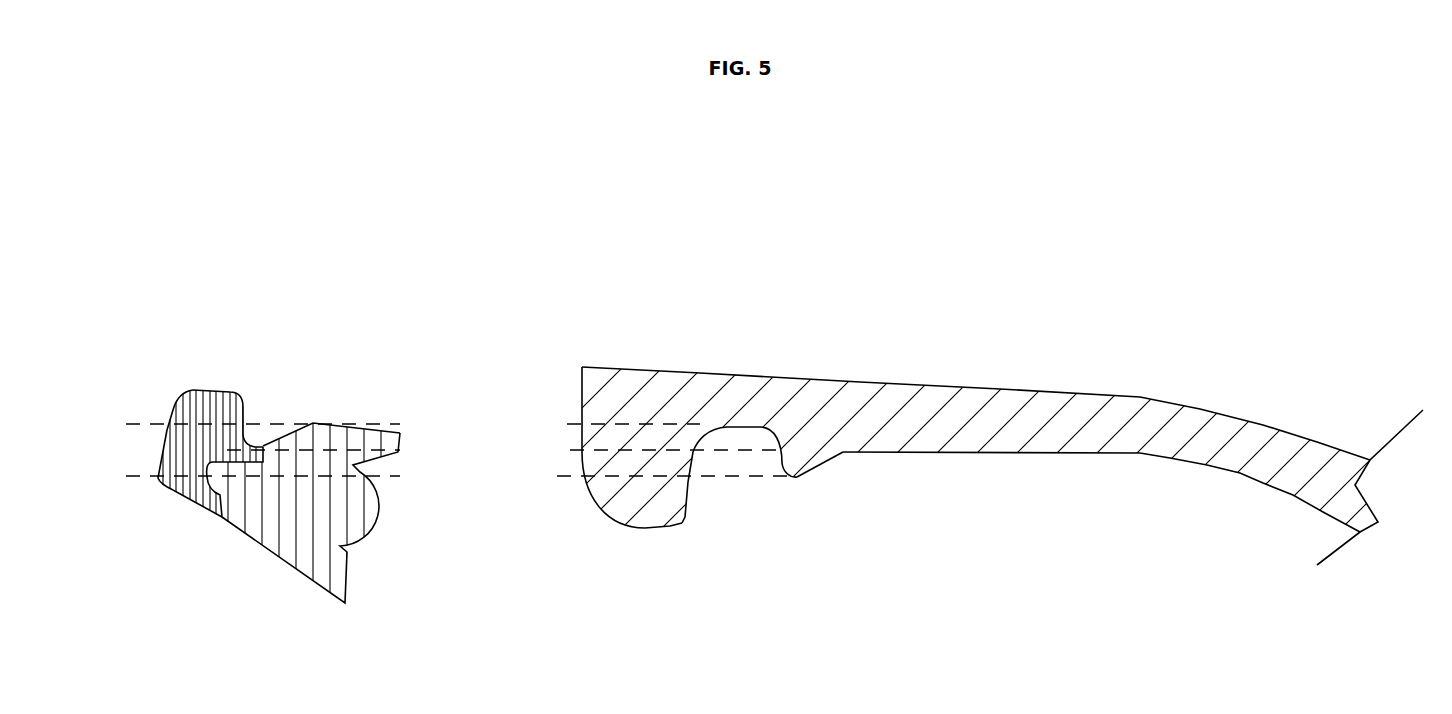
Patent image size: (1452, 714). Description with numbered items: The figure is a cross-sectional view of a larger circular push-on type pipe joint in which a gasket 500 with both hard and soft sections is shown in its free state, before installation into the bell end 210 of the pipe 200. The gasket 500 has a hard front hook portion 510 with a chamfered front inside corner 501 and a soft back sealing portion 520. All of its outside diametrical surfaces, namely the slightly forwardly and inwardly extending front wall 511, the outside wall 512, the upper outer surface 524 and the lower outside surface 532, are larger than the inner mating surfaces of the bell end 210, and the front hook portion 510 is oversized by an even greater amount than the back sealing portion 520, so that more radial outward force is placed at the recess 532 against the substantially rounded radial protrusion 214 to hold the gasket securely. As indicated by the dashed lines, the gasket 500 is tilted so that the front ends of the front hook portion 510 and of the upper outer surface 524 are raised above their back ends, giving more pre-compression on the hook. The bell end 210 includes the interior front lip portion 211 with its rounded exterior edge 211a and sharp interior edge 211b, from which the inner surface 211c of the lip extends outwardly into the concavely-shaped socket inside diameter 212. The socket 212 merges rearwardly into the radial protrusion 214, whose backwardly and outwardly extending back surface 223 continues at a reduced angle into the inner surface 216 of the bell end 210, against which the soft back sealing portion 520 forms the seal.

The pipe 200 is at (1098, 381).
The bell end 210 is at (582, 367).
The interior front lip portion 211 is at (625, 538).
The rounded front or exterior edge 211a is at (593, 498).
The substantially sharp rear or interior edge 211b is at (672, 530).
The inner surface of the lip portion 211c is at (687, 490).
The socket or groove 212 is at (745, 427).
The substantially round radial protrusion 214 is at (798, 475).
The inner surface of the bell end 216 is at (880, 452).
The backwardly and outwardly extending back surface 223 is at (833, 453).
The gasket 500 is at (230, 321).
The chamfered front inside corner 501 is at (180, 408).
The front hook portion 510 is at (195, 410).
The front wall 511 is at (163, 450).
The outside wall 512 is at (217, 392).
The back sealing portion 520 is at (338, 482).
The upper outer surface 524 is at (357, 430).
The lower outside surface 532 is at (257, 443).